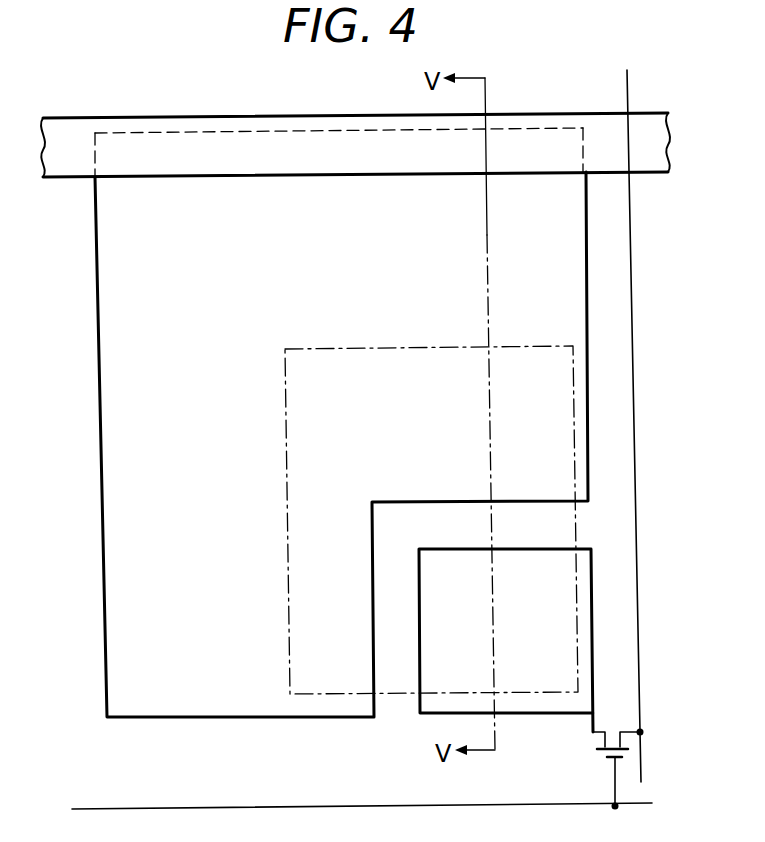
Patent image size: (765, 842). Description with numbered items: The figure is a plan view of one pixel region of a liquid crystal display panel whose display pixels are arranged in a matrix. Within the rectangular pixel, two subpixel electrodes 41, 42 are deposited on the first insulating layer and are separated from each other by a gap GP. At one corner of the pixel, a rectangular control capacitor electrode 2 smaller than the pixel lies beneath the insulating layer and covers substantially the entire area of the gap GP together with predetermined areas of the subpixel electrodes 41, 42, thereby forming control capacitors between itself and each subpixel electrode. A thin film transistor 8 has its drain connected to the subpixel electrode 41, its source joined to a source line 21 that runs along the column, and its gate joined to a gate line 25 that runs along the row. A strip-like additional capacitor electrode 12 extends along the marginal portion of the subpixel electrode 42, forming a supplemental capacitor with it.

The additional capacitor electrode 12 is at (65, 140).
The subpixel electrode 42 is at (113, 225).
The control capacitor electrode 2 is at (308, 368).
The source line 21 is at (633, 338).
The gap GP is at (582, 521).
The subpixel electrode 41 is at (585, 565).
The thin film transistor 8 is at (612, 722).
The gate line 25 is at (150, 808).